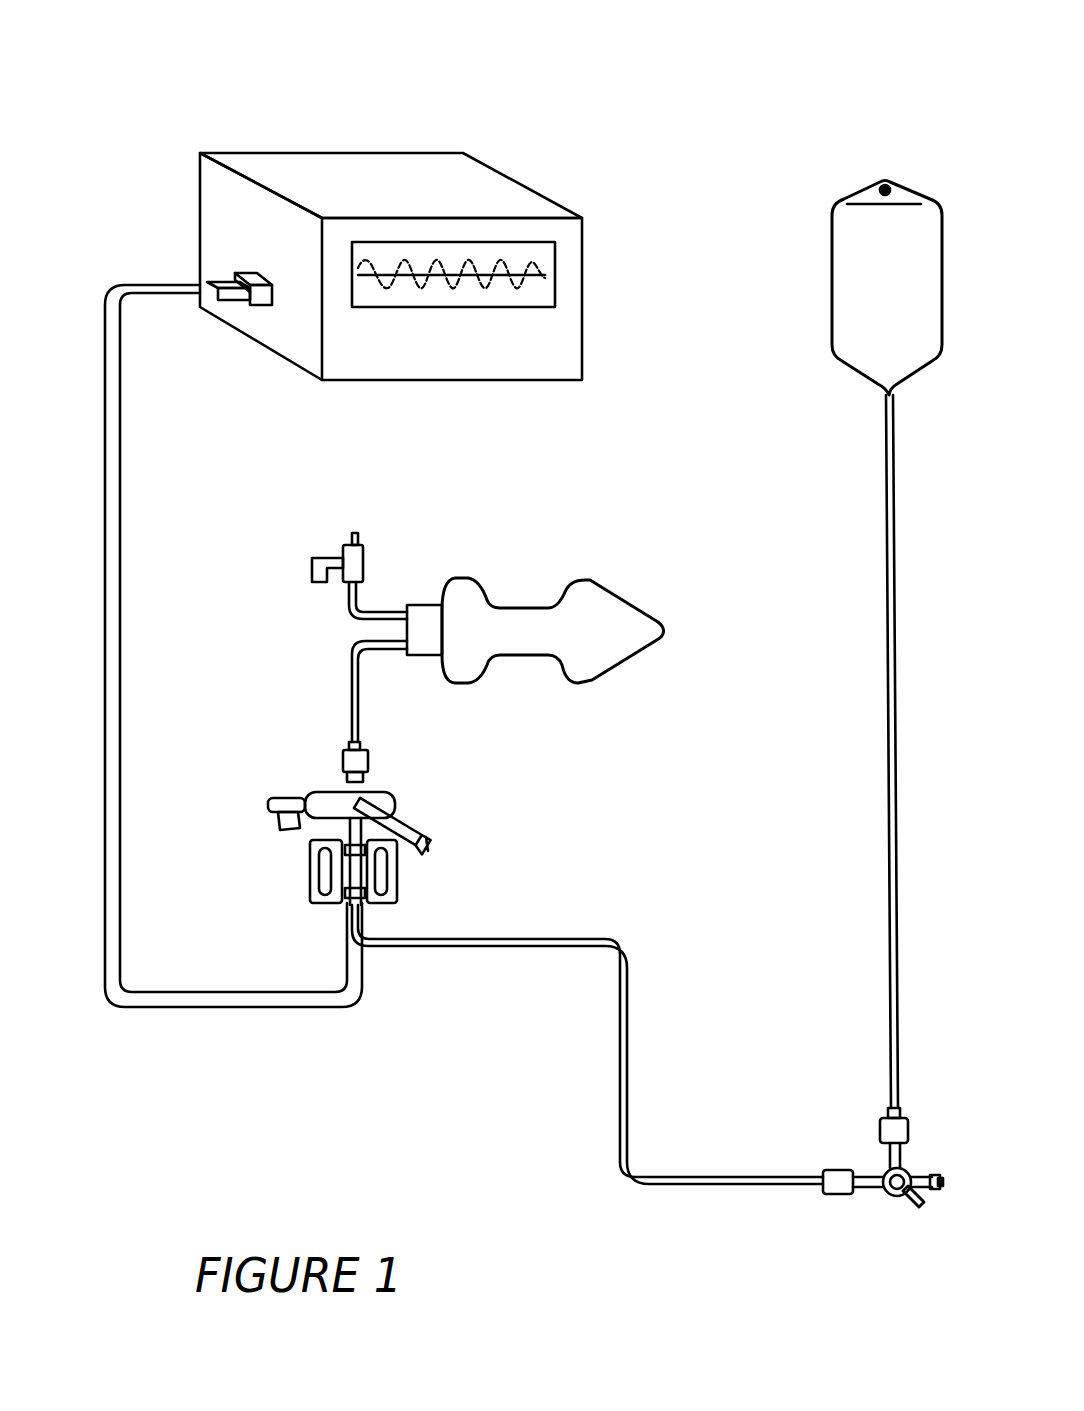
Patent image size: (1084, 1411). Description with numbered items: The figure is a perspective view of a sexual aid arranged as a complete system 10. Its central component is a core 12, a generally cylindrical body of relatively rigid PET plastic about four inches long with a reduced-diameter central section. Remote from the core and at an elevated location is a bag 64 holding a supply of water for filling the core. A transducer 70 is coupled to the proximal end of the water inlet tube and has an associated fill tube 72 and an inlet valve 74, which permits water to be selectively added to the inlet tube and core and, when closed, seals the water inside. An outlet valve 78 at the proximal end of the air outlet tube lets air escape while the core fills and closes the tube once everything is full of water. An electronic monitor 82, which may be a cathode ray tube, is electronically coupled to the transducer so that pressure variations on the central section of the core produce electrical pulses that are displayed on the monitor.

The system 10 is at (200, 130).
The core 12 is at (528, 652).
The bag 64 is at (830, 276).
The transducer 70 is at (365, 905).
The fill tube 72 is at (545, 945).
The inlet valve 74 is at (885, 1198).
The outlet valve 78 is at (365, 567).
The electronic monitor 82 is at (535, 190).